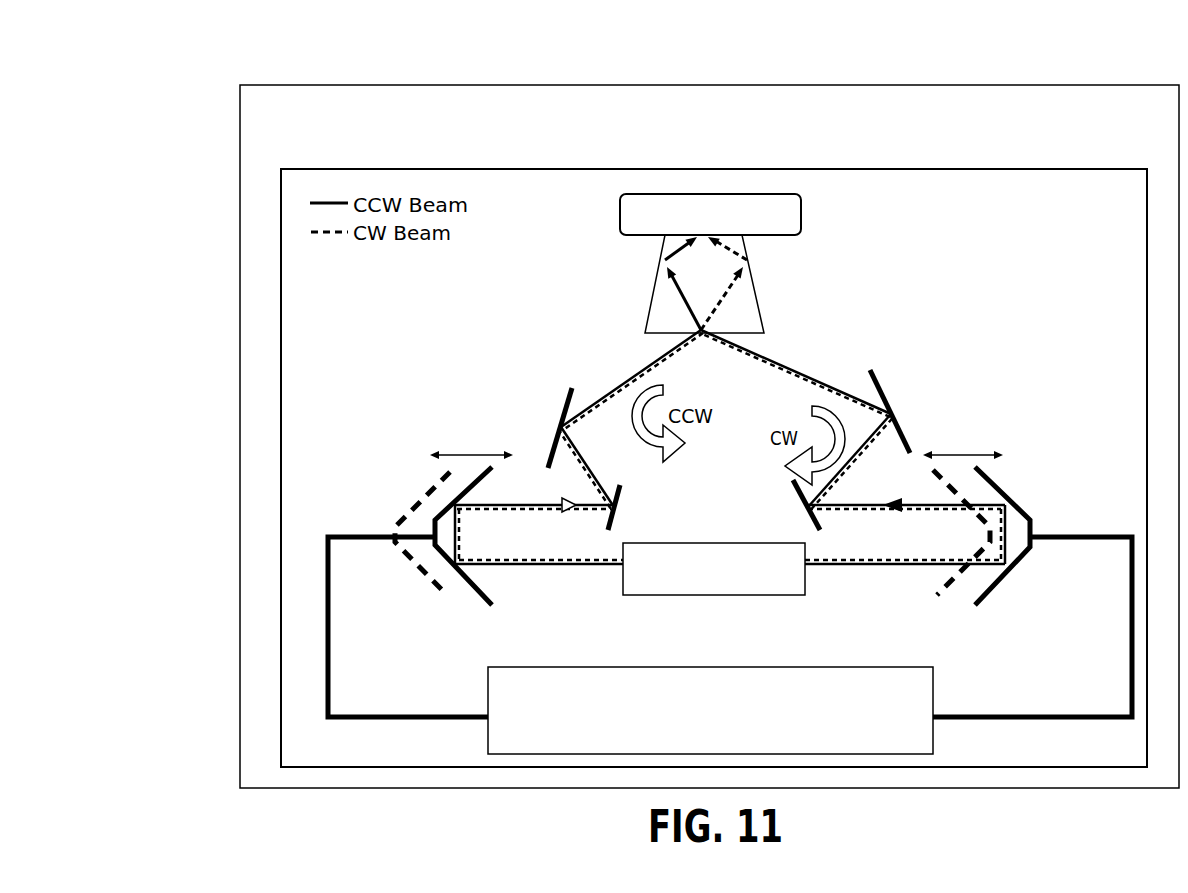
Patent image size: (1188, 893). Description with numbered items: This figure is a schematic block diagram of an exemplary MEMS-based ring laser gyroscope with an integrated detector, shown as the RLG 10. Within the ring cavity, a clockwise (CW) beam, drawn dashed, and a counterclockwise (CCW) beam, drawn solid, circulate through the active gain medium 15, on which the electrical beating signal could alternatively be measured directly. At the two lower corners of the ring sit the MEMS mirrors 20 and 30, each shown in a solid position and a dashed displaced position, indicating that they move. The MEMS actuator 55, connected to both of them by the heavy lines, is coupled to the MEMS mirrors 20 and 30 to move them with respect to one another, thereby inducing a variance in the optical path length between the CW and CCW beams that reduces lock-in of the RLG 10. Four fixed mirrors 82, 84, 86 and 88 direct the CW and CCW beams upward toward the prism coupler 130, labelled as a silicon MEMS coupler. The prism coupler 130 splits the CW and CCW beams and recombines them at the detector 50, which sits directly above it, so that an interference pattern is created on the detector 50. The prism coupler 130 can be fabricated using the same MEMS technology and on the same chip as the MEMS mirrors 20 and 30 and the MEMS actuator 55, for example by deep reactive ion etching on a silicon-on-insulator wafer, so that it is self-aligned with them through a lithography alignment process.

The RLG 10 is at (190, 114).
The active gain medium 15 is at (727, 581).
The MEMS mirror 20 is at (475, 483).
The MEMS mirror 30 is at (1003, 490).
The detector 50 is at (803, 214).
The MEMS actuator 55 is at (727, 734).
The fixed mirror 82 is at (791, 503).
The fixed mirror 84 is at (620, 502).
The fixed mirror 86 is at (566, 397).
The fixed mirror 88 is at (881, 388).
The prism coupler 130 is at (752, 279).